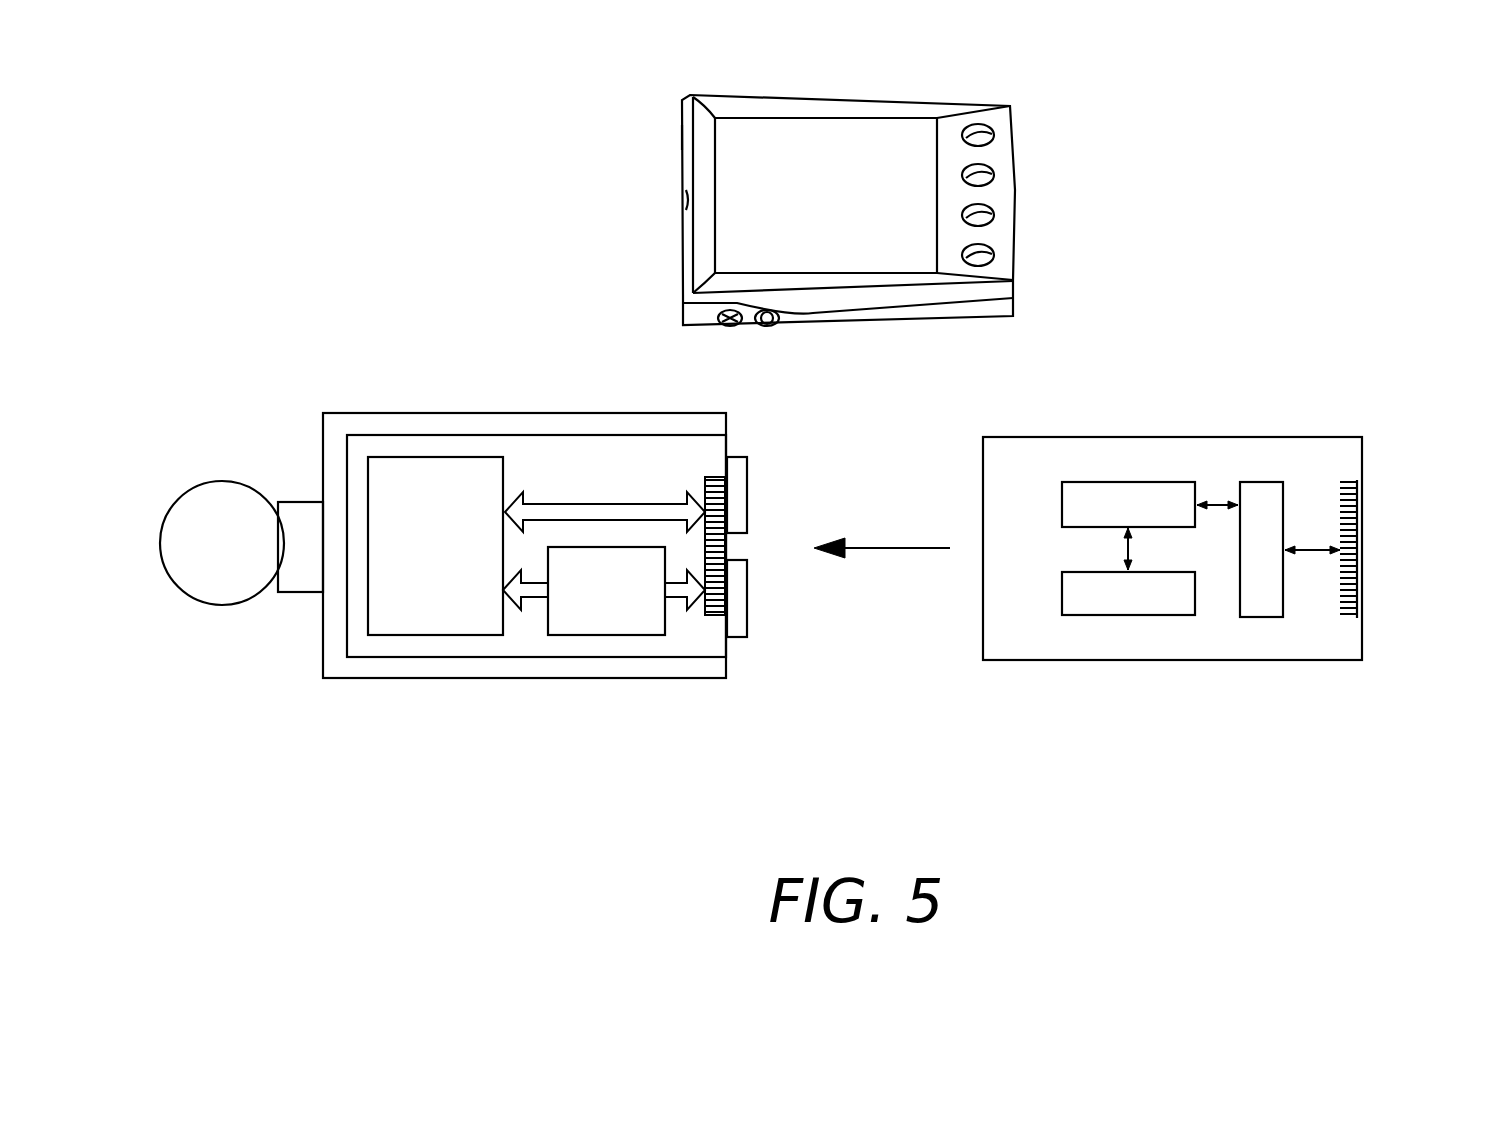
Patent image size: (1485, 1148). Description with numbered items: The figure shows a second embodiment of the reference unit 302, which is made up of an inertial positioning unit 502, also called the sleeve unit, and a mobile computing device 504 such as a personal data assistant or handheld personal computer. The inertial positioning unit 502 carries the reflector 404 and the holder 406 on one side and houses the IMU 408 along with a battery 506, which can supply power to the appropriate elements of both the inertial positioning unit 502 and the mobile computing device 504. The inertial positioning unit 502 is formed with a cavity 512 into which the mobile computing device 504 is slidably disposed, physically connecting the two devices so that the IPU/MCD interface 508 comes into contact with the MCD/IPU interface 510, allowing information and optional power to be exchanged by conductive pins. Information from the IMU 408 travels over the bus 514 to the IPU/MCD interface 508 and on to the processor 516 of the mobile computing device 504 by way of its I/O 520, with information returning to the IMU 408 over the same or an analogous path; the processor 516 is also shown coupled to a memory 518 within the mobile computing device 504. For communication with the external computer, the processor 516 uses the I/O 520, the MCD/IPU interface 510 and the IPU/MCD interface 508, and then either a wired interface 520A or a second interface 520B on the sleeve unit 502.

The reference unit 302 is at (1203, 197).
The reflector 404 is at (235, 607).
The holder 406 is at (298, 500).
The IMU 408 is at (437, 638).
The inertial positioning unit 502 is at (398, 412).
The mobile computing device 504 is at (995, 322).
The battery 506 is at (592, 637).
The IPU/MCD interface 508 is at (713, 617).
The MCD/IPU interface 510 is at (1362, 512).
The cavity 512 is at (395, 658).
The bus 514 is at (560, 503).
The processor 516 is at (1130, 482).
The memory 518 is at (1103, 617).
The I/O 520 is at (1260, 618).
The wired interface 520A is at (748, 598).
The connector port 520B is at (747, 503).